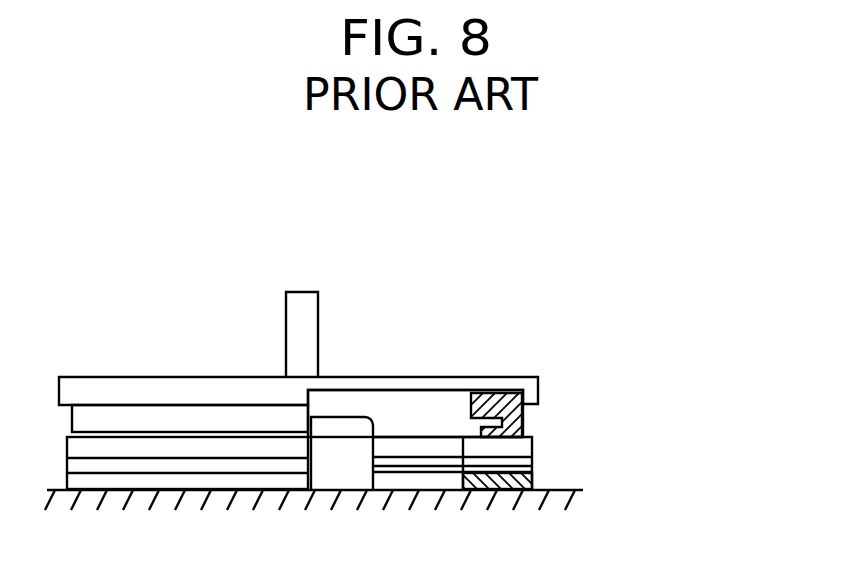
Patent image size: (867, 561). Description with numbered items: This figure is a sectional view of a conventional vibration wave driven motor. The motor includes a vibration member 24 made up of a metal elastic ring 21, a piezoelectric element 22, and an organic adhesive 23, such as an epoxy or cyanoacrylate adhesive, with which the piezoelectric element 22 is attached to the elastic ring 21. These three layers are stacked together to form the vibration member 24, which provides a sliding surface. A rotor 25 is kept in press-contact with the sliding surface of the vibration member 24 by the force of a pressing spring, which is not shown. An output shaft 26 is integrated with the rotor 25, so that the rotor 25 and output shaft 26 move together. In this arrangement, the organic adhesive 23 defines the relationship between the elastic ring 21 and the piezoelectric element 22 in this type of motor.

The output shaft 26 is at (318, 335).
The rotor 25 is at (523, 417).
The vibration member 24 is at (415, 427).
The metal elastic ring 21 is at (530, 447).
The organic adhesive 23 is at (530, 457).
The piezoelectric element 22 is at (530, 467).